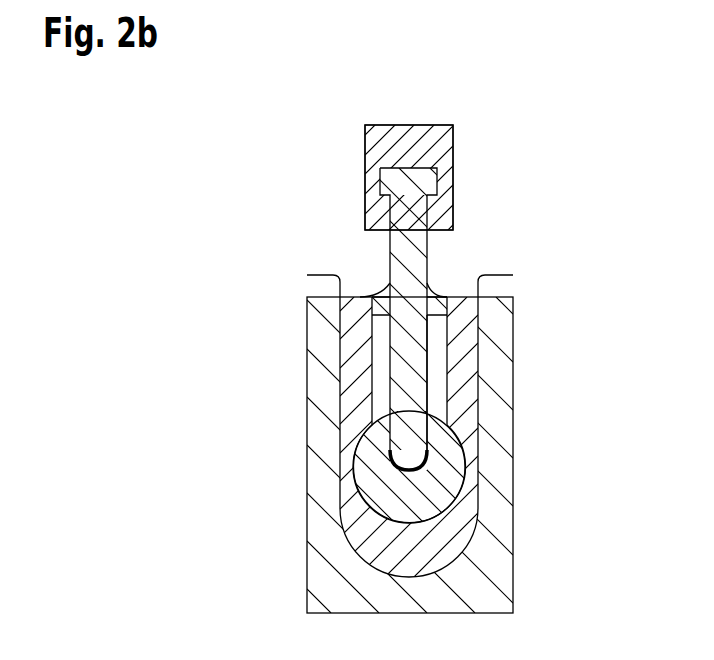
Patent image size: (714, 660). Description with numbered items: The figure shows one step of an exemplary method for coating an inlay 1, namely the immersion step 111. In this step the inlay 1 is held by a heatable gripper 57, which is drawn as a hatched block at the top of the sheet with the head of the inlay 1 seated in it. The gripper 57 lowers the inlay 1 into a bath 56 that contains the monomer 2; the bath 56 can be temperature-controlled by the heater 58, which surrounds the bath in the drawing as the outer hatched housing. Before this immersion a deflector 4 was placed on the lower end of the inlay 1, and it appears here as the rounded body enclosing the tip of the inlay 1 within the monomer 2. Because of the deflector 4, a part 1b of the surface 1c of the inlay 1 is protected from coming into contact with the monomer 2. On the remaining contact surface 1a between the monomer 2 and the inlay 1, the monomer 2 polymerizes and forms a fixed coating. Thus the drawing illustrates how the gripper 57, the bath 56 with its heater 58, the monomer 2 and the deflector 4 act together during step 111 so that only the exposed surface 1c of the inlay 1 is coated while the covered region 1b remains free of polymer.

The immersion step 111 is at (407, 110).
The heatable gripper 57 is at (446, 145).
The inlay 1 is at (428, 256).
The contact surface 1a is at (444, 296).
The covered region 1b is at (436, 365).
The surface of the inlay 1c is at (390, 253).
The bath 56 is at (498, 273).
The monomer 2 is at (355, 405).
The heater 58 is at (502, 432).
The deflector 4 is at (442, 483).